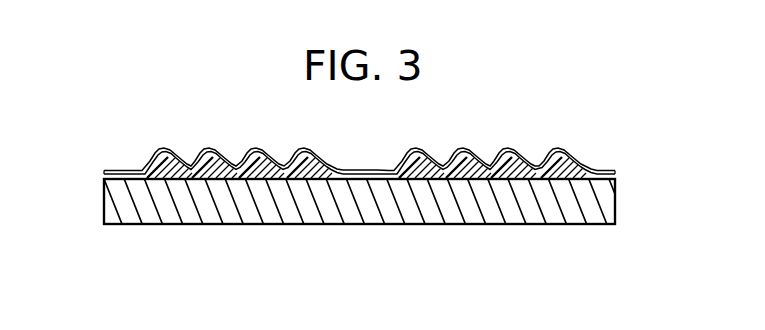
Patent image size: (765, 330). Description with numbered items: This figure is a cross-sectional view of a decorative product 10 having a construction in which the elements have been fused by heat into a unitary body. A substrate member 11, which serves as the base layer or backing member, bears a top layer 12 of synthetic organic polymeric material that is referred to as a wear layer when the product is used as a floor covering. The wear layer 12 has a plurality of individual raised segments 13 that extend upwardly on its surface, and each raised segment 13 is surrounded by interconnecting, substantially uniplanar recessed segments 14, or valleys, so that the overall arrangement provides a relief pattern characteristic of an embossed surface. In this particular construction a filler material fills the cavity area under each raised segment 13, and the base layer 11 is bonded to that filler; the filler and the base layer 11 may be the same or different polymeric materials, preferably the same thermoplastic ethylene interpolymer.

The decorative product 10 is at (472, 229).
The substrate member 11 is at (365, 232).
The top layer 12 is at (126, 171).
The raised segments 13 is at (567, 164).
The recessed segments 14 is at (353, 170).